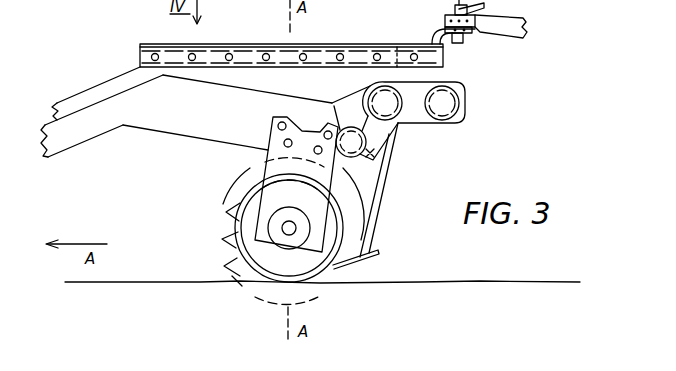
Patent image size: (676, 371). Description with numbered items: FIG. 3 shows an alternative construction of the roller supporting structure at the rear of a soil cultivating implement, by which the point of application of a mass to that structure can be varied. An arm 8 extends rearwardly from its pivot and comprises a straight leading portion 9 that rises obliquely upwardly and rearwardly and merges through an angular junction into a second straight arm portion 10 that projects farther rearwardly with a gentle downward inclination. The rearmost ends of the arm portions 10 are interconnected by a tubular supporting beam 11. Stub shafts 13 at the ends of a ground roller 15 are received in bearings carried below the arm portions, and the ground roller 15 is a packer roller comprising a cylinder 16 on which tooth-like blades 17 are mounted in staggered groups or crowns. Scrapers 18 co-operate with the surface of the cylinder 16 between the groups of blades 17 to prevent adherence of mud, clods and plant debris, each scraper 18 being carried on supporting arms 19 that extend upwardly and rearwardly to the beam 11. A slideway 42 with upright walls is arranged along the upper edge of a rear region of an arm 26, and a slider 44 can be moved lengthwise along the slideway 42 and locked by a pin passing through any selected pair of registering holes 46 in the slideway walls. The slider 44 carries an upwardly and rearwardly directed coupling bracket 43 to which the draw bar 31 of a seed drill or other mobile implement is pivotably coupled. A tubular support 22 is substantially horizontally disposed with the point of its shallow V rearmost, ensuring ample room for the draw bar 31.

The arm 8 is at (166, 138).
The straight leading portion 9 is at (72, 147).
The second straight arm portion 10 is at (212, 141).
The tubular supporting beam 11 is at (383, 166).
The stub shaft 13 is at (282, 228).
The ground roller 15 is at (223, 257).
The cylinder 16 is at (231, 266).
The tooth-like blades 17 is at (235, 230).
The scraper 18 is at (377, 253).
The supporting arm 19 is at (377, 207).
The tubular support 22 is at (427, 123).
The arm 26 is at (97, 88).
The draw bar 31 is at (526, 23).
The slideway 42 is at (150, 44).
The coupling bracket 43 is at (467, 42).
The slider 44 is at (423, 44).
The registering holes 46 is at (266, 53).